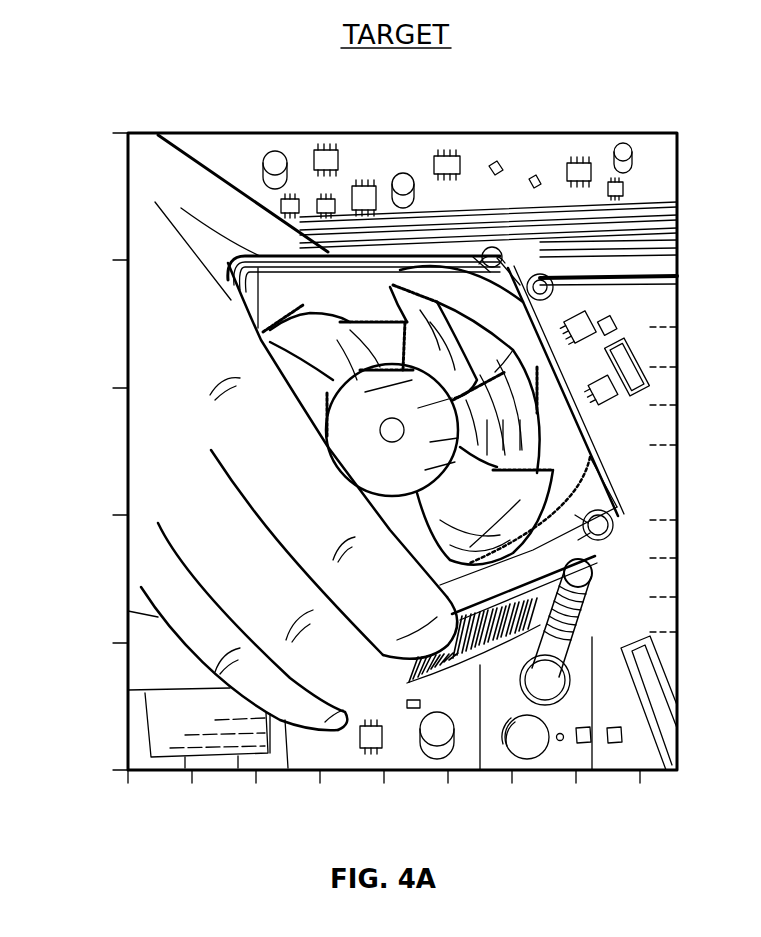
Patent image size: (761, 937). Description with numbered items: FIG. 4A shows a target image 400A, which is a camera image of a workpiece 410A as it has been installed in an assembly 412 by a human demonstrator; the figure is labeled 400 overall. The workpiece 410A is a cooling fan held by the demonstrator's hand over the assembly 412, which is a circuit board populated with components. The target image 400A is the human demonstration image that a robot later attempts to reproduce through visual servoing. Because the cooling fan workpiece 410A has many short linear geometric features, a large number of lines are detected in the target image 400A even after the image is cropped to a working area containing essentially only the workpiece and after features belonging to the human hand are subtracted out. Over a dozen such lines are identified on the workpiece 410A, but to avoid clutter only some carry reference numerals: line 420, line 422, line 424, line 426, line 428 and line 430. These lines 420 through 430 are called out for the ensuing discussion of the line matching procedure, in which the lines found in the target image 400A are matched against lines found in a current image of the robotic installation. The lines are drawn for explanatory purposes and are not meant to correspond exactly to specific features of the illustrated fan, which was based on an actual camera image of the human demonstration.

The computing device 400 is at (705, 332).
The target image 400A is at (213, 68).
The workpiece 410A is at (628, 433).
The assembly 412 is at (557, 745).
The line 420 is at (355, 250).
The line 422 is at (412, 288).
The line 424 is at (413, 336).
The line 426 is at (537, 380).
The line 428 is at (548, 480).
The line 430 is at (550, 543).